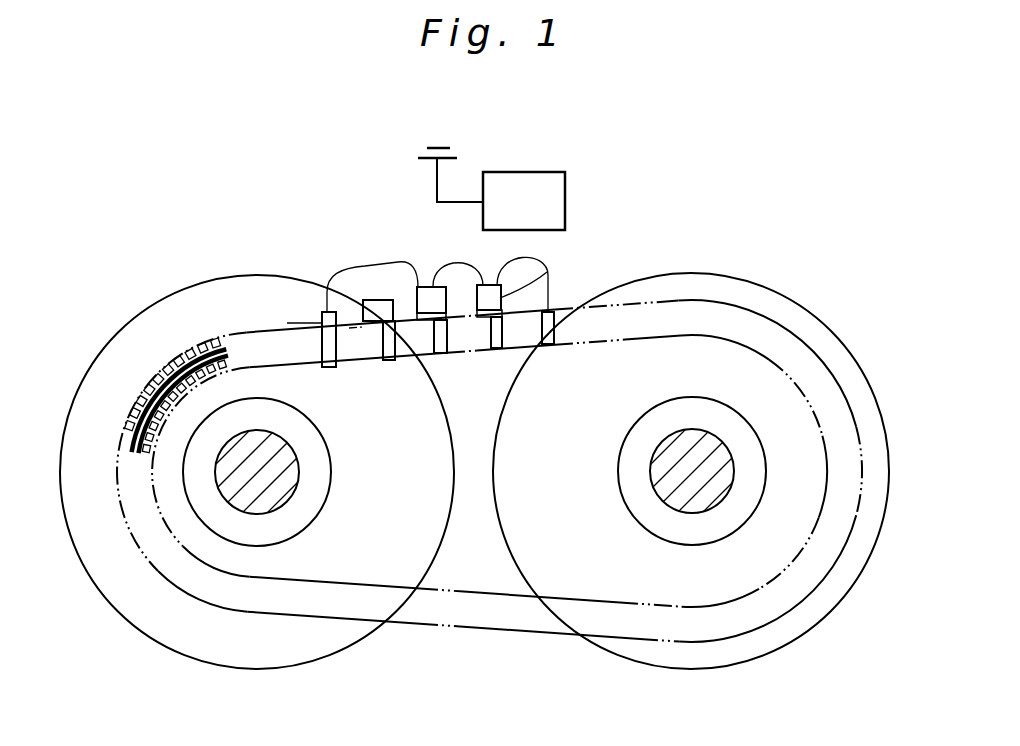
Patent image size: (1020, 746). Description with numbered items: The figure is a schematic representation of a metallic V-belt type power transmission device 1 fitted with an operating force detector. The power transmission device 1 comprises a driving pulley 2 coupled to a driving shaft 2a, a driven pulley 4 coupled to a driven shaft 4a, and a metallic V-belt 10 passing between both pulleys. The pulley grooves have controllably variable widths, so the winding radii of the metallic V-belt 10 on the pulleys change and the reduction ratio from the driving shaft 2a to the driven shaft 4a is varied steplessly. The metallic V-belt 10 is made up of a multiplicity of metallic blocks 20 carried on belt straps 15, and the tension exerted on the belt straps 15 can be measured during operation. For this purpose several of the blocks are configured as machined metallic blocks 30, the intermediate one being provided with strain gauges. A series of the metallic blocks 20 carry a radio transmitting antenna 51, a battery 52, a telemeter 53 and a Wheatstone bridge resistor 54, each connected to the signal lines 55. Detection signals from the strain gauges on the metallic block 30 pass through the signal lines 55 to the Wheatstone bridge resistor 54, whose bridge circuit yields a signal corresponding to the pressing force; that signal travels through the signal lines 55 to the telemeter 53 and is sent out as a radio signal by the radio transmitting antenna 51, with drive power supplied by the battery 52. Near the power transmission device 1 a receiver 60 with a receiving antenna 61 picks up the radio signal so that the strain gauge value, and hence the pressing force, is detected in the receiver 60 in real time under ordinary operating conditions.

The power transmission device 1 is at (600, 252).
The driving pulley 2 is at (255, 282).
The driving shaft 2a is at (299, 476).
The driven pulley 4 is at (741, 282).
The driven shaft 4a is at (653, 476).
The metallic V-belt 10 is at (400, 632).
The belt straps 15 is at (130, 446).
The metallic blocks 20 is at (138, 411).
The metallic block with strain gauges 30 is at (550, 345).
The radio transmitting antenna 51 is at (321, 331).
The battery 52 is at (381, 340).
The telemeter 53 is at (441, 292).
The Wheatstone bridge resistor 54 is at (536, 272).
The signal lines 55 is at (416, 263).
The receiver 60 is at (545, 214).
The receiving antenna 61 is at (437, 186).